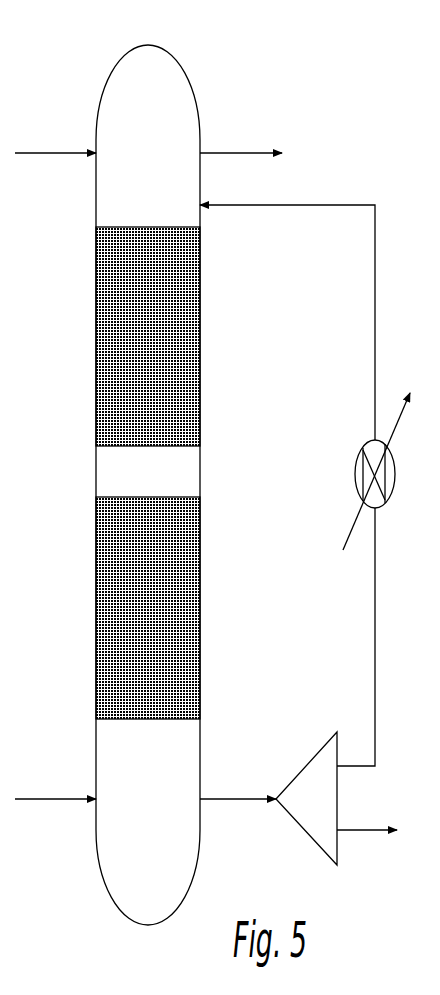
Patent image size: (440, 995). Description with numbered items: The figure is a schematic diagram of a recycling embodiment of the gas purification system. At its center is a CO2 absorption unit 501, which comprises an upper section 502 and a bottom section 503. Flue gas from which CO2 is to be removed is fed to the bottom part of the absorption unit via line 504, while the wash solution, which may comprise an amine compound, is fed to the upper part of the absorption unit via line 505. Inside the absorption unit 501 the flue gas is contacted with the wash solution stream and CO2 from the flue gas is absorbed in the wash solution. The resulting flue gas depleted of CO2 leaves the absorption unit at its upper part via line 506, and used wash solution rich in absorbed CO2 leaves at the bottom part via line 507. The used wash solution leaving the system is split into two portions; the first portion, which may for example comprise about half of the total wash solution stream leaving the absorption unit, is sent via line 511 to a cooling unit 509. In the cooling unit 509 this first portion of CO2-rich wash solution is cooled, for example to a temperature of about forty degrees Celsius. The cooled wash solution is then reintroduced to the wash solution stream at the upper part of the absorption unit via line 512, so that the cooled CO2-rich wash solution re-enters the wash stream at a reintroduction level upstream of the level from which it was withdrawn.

The CO2 absorption unit 501 is at (193, 82).
The upper section 502 is at (201, 307).
The bottom section 503 is at (201, 600).
The line 504 is at (48, 802).
The line 505 is at (49, 150).
The line 506 is at (248, 151).
The line 507 is at (240, 797).
The cooling unit 509 is at (382, 510).
The line 511 is at (360, 762).
The line 512 is at (327, 203).